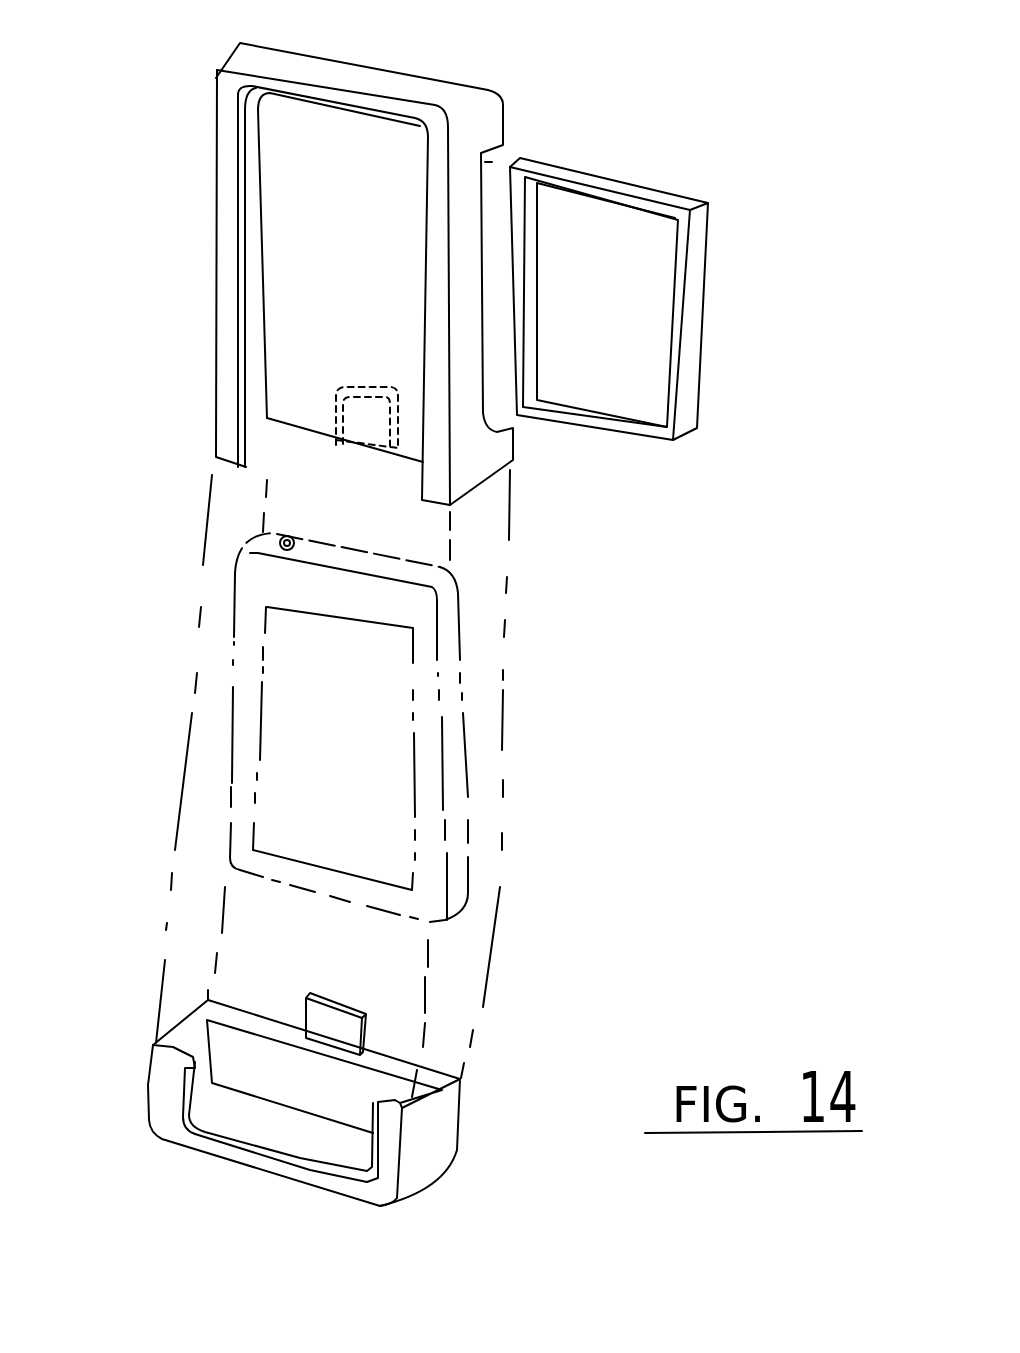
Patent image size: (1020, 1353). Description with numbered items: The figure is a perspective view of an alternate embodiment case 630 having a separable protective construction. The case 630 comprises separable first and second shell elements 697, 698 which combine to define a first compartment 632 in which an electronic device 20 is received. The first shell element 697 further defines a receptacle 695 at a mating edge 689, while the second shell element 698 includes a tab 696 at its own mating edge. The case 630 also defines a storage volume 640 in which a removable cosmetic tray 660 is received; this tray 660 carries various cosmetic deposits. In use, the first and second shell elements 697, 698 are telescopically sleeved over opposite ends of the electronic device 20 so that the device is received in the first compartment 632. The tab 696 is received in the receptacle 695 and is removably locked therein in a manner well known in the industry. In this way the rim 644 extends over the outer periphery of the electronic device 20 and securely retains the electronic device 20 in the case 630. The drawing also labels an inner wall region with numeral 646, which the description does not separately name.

The electronic device 20 is at (470, 770).
The case 630 is at (675, 657).
The storage volume 640 is at (480, 190).
The removable cosmetic tray 660 is at (685, 187).
The rim 644 is at (240, 160).
The first shell element 697 is at (215, 228).
The first compartment 632 is at (310, 292).
The inner wall 646 is at (242, 355).
The receptacle 695 is at (314, 448).
The mating edge 689 is at (403, 463).
The tab 696 is at (305, 1012).
The second shell element 698 is at (152, 1082).